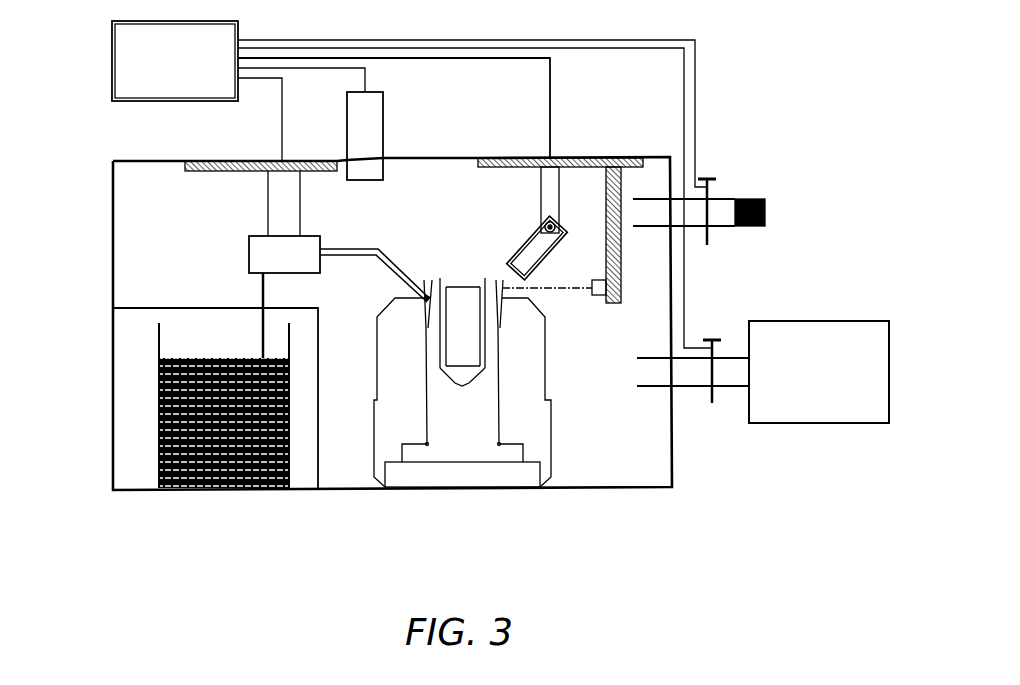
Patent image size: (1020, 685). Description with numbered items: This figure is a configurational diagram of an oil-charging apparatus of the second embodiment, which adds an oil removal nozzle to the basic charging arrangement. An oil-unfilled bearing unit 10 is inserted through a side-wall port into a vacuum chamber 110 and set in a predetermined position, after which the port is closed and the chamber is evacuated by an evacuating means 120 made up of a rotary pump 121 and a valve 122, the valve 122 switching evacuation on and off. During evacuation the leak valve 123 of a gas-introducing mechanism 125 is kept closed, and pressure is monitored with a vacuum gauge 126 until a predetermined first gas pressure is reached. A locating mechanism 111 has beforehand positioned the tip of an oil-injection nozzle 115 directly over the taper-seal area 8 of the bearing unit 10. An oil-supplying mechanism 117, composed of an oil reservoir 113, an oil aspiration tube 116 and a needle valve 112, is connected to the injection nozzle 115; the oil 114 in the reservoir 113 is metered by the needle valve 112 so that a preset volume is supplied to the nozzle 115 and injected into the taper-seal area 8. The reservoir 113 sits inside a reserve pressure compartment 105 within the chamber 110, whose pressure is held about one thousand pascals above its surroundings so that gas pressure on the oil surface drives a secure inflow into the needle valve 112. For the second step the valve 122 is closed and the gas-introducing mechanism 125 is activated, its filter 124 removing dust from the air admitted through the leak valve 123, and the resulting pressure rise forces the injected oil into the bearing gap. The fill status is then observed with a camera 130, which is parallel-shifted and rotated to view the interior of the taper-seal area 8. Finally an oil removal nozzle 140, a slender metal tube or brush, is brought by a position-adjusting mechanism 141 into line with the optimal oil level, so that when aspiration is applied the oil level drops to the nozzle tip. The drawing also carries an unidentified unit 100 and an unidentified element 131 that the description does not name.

The taper-seal area 8 is at (426, 299).
The bearing unit 10 is at (561, 446).
The control unit 100 is at (137, 75).
The reserve pressure compartment 105 is at (135, 405).
The vacuum chamber 110 is at (419, 152).
The locating mechanism 111 is at (283, 188).
The needle valve 112 is at (272, 257).
The oil reservoir 113 is at (155, 345).
The oil 114 is at (193, 480).
The oil-injection nozzle 115 is at (400, 270).
The oil aspiration tube 116 is at (292, 463).
The oil-supplying mechanism 117 is at (207, 268).
The evacuating means 120 is at (752, 433).
The rotary pump 121 is at (825, 412).
The valve 122 is at (713, 332).
The leak valve 123 is at (717, 172).
The filter 124 is at (765, 203).
The gas-introducing mechanism 125 is at (761, 162).
The vacuum gauge 126 is at (368, 173).
The camera 130 is at (538, 252).
The mirror holder 131 is at (558, 222).
The oil removal nozzle 140 is at (547, 292).
The position-adjusting mechanism 141 is at (613, 293).